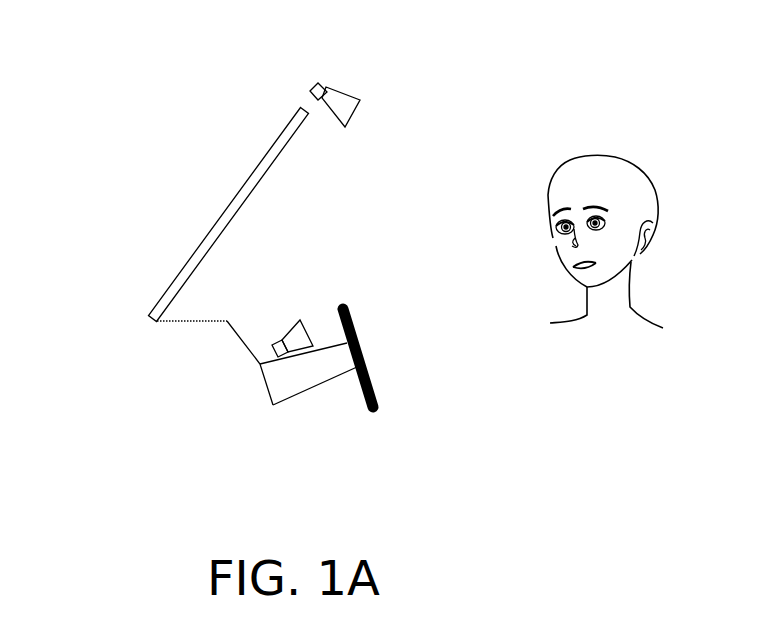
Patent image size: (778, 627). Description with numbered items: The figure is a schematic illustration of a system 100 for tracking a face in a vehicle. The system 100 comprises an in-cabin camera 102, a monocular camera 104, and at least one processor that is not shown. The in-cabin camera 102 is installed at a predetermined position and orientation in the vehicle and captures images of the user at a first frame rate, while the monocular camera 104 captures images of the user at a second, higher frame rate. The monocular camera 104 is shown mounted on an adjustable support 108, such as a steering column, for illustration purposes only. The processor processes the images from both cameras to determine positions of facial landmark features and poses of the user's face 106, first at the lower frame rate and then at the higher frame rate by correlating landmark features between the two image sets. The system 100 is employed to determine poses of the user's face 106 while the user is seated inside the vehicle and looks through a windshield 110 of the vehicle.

The system 100 is at (145, 100).
The in-cabin camera 102 is at (310, 89).
The monocular camera 104 is at (260, 364).
The user's face 106 is at (607, 260).
The adjustable support 108 is at (280, 388).
The windshield 110 is at (148, 318).